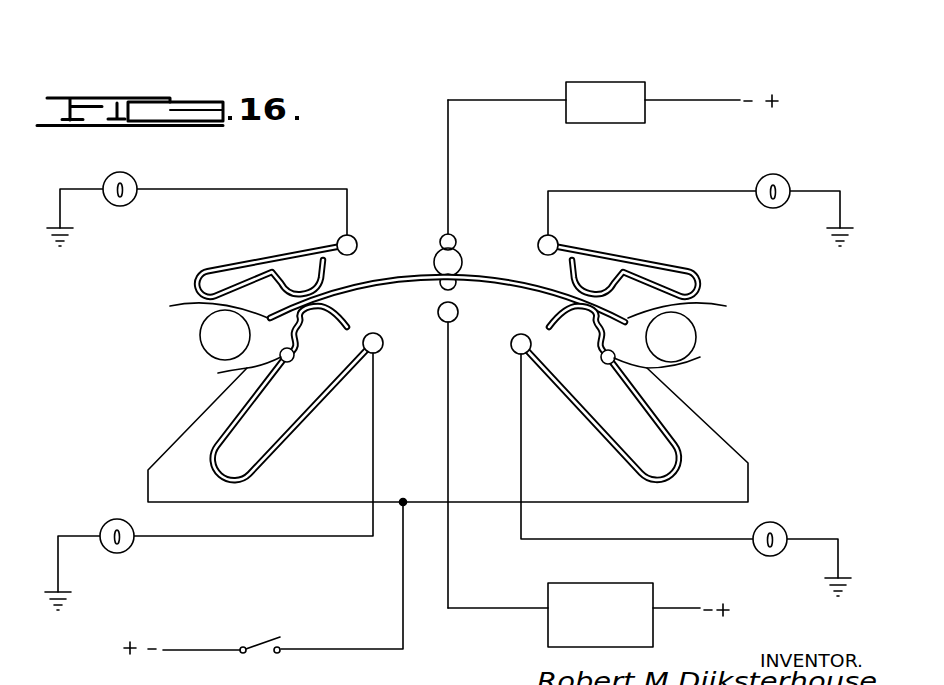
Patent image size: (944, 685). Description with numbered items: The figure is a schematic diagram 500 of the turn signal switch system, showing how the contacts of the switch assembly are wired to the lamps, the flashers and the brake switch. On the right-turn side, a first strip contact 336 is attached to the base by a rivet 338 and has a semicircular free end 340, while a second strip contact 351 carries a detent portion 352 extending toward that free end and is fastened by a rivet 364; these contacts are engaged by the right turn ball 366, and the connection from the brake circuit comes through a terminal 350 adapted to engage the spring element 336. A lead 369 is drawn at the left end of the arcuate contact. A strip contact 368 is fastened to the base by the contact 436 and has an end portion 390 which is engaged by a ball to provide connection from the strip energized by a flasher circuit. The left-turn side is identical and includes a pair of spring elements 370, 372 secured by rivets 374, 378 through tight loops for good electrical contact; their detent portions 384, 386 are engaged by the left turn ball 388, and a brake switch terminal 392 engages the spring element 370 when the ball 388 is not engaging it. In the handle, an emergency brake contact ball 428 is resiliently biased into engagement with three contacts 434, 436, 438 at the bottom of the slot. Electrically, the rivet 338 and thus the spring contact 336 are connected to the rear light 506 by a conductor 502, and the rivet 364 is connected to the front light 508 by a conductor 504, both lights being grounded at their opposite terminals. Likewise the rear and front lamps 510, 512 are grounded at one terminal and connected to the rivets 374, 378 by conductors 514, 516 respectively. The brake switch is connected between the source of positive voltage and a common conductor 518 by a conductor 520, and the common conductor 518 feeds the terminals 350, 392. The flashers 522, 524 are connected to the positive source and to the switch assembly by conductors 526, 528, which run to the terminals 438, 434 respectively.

The schematic diagram 500 is at (383, 185).
The second strip contact 351 is at (276, 247).
The rivet 364 is at (357, 241).
The detent portion 352 is at (348, 283).
The left lead 369 is at (195, 296).
The right turn ball 366 is at (212, 326).
The strip contact 368 is at (380, 290).
The terminal 350 is at (218, 373).
The free end 340 is at (324, 322).
The first strip contact 336 is at (216, 432).
The rivet 338 is at (368, 352).
The contact 438 is at (441, 321).
The contact 436 is at (460, 292).
The contact 434 is at (458, 238).
The emergency brake contact ball 428 is at (463, 264).
The spring element 372 is at (645, 252).
The rivet 378 is at (557, 237).
The detent portion 386 is at (665, 258).
The end portion 390 is at (698, 297).
The ball 388 is at (685, 333).
The brake switch terminal 392 is at (683, 370).
The detent portion 384 is at (571, 316).
The rivet member 374 is at (514, 351).
The spring element 370 is at (610, 464).
The conductor 502 is at (374, 472).
The conductor 504 is at (238, 187).
The rear light 506 is at (123, 490).
The front light 508 is at (134, 175).
The rear lamp 510 is at (783, 524).
The front lamp 512 is at (790, 174).
The conductor 514 is at (567, 537).
The conductor 516 is at (660, 188).
The common conductor 518 is at (470, 500).
The conductor 520 is at (320, 649).
The flasher 522 is at (625, 583).
The flasher 524 is at (608, 82).
The conductor 526 is at (477, 610).
The conductor 528 is at (480, 100).